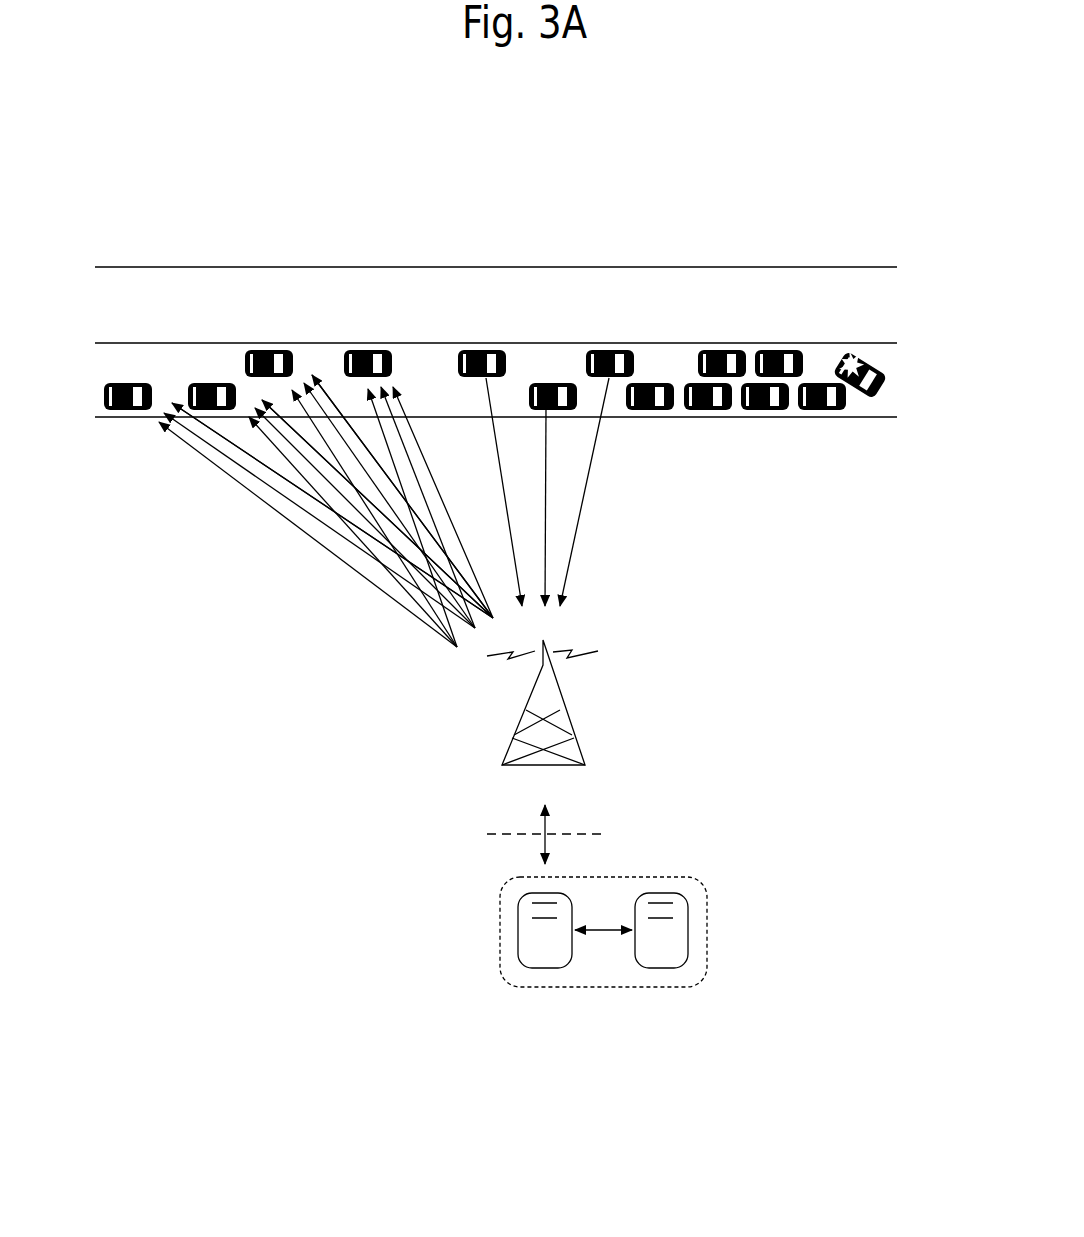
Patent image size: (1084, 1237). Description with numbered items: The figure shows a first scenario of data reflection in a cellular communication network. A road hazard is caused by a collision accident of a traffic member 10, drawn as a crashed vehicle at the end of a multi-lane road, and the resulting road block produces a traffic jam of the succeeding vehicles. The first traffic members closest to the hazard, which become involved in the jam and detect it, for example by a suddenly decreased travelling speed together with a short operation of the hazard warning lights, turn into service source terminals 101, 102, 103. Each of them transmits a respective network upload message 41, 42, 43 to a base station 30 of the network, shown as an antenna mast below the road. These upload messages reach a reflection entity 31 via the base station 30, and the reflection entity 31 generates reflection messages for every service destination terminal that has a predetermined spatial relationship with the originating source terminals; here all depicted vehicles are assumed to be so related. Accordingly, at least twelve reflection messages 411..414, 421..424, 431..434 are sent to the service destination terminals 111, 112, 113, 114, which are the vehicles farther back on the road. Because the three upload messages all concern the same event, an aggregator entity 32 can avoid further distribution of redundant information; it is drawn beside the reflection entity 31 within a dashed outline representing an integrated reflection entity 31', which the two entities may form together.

The traffic member 10 is at (823, 380).
The service source terminal 101 is at (602, 350).
The service source terminal 102 is at (548, 383).
The service source terminal 103 is at (475, 350).
The service destination terminal 111 is at (362, 350).
The service destination terminal 112 is at (263, 350).
The service destination terminal 113 is at (207, 383).
The service destination terminal 114 is at (135, 383).
The base station 30 is at (513, 735).
The reflection entity 31 is at (487, 937).
The integrated reflection entity 31' is at (554, 932).
The aggregator entity 32 is at (660, 968).
The network upload message 41 is at (593, 463).
The network upload message 42 is at (547, 510).
The network upload message 43 is at (517, 550).
The reflection messages 411..414 is at (493, 618).
The reflection messages 421..424 is at (475, 628).
The reflection messages 431..434 is at (457, 652).